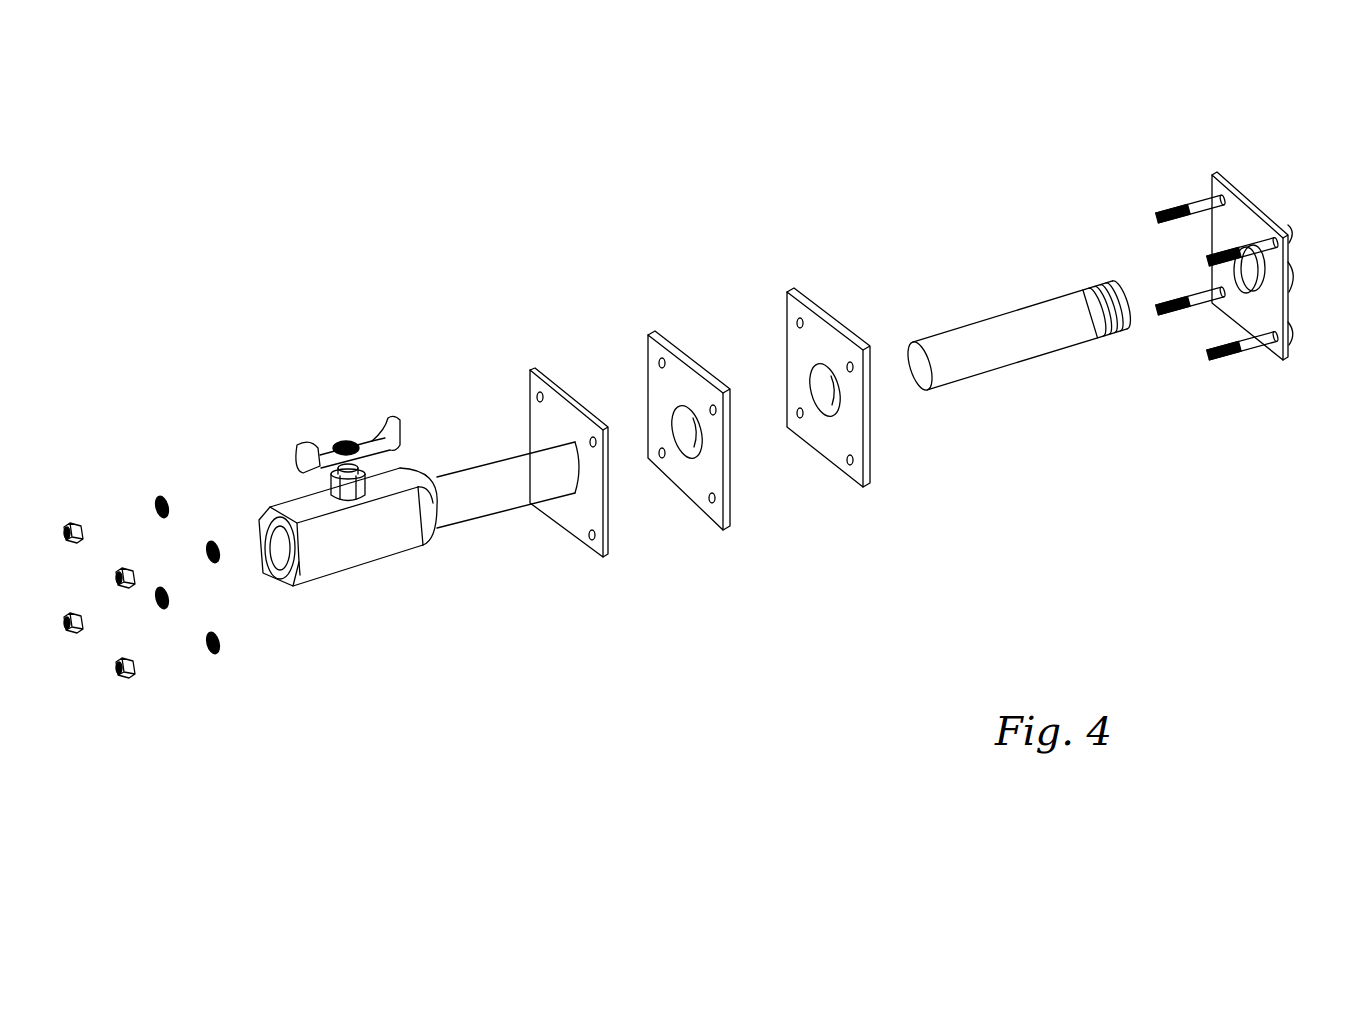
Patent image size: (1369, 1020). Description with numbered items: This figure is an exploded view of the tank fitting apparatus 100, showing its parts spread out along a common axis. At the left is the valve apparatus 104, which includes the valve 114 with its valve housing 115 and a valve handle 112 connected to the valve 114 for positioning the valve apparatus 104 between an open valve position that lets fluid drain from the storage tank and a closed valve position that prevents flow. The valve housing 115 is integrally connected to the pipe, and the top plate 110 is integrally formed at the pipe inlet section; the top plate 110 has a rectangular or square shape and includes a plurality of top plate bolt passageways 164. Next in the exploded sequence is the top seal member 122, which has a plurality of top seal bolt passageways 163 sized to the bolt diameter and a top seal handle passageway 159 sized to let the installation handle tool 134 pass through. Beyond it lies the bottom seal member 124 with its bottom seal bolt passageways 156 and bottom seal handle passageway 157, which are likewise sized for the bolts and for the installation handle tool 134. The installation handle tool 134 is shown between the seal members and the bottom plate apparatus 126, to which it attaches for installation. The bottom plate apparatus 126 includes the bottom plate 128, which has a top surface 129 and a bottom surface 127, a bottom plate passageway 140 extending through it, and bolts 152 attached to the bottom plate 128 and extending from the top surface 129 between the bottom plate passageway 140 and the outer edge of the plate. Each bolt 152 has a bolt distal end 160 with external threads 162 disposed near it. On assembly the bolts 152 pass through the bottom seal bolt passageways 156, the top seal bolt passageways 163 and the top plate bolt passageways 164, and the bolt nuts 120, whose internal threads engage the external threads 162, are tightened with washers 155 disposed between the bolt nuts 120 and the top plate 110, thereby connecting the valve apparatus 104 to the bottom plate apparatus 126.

The tank fitting apparatus 100 is at (250, 145).
The valve apparatus 104 is at (258, 468).
The top plate 110 is at (529, 416).
The valve handle 112 is at (305, 441).
The valve 114 is at (331, 576).
The valve housing 115 is at (393, 553).
The bolt nuts 120 is at (128, 676).
The top seal member 122 is at (647, 336).
The bottom seal member 124 is at (789, 291).
The bottom plate apparatus 126 is at (1258, 168).
The bottom surface 127 is at (1213, 176).
The bottom plate 128 is at (1228, 318).
The top surface 129 is at (1220, 230).
The installation handle tool 134 is at (1022, 318).
The bottom plate passageway 140 is at (1260, 285).
The bolts 152 is at (1257, 352).
The washers 155 is at (214, 654).
The bottom seal bolt passageways 156 is at (848, 463).
The bottom seal handle passageway 157 is at (818, 385).
The top seal handle passageway 159 is at (678, 432).
The bolt distal end 160 is at (1207, 354).
The external threads 162 is at (1222, 365).
The top seal bolt passageways 163 is at (710, 500).
The top plate bolt passageways 164 is at (590, 538).